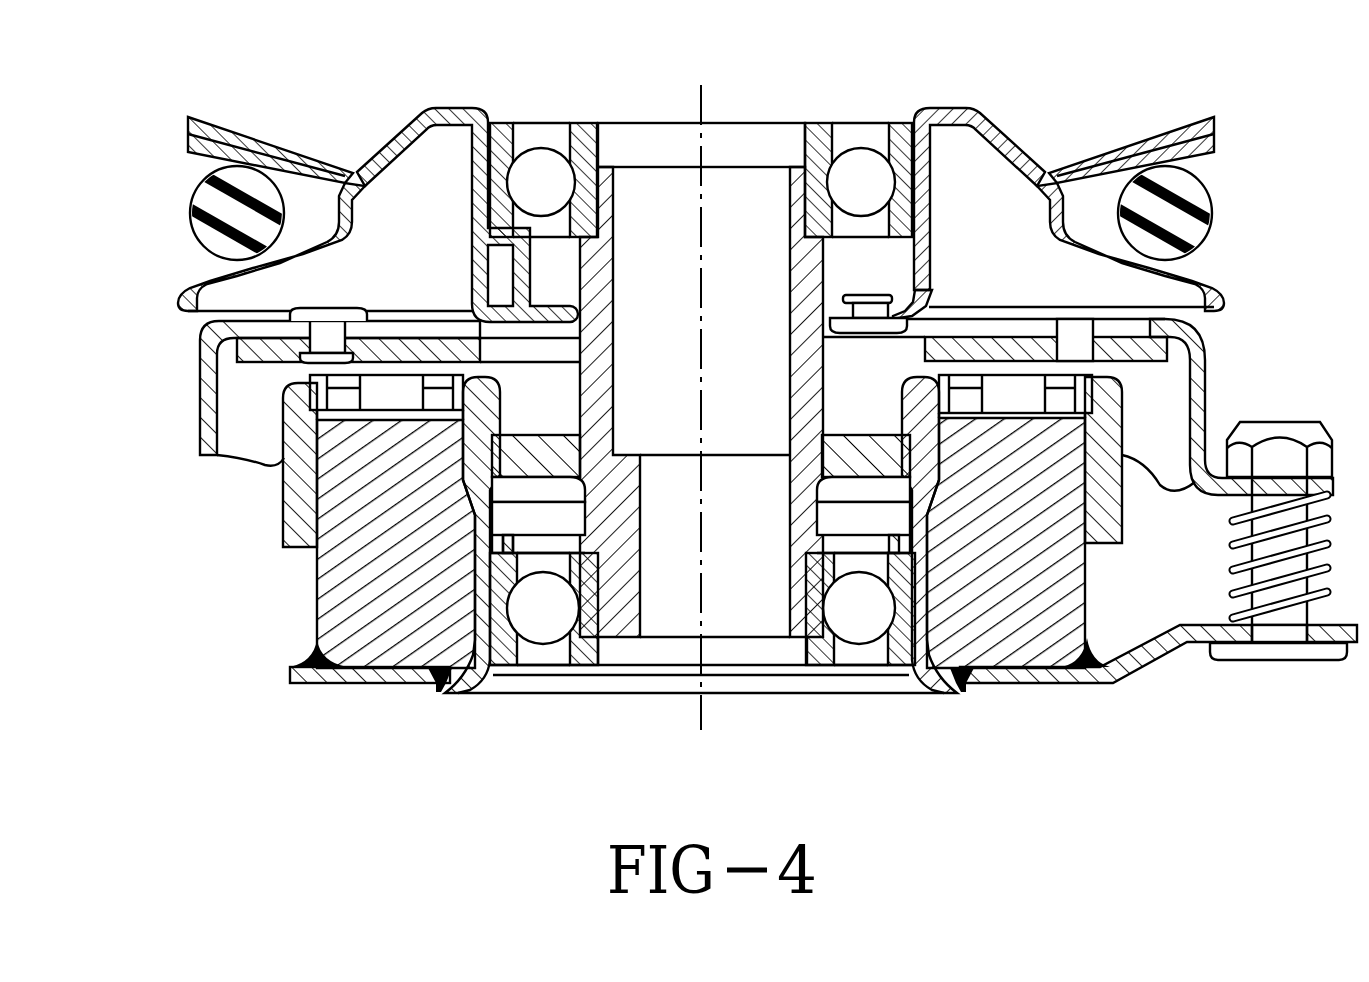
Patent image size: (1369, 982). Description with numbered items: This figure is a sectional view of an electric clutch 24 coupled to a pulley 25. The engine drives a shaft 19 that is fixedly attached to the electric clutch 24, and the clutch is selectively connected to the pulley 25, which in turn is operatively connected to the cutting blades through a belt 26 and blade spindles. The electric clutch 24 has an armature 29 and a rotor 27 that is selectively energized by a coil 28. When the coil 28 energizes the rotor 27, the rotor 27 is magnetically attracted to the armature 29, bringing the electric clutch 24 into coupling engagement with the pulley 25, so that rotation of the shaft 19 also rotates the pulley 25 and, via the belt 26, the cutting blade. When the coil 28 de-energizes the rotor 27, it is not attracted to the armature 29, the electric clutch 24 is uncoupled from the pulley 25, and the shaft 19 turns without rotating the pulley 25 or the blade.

The shaft 19 is at (693, 625).
The electric clutch 24 is at (236, 645).
The pulley 25 is at (273, 150).
The belt 26 is at (207, 208).
The rotor 27 is at (292, 519).
The coil 28 is at (412, 640).
The armature 29 is at (252, 348).